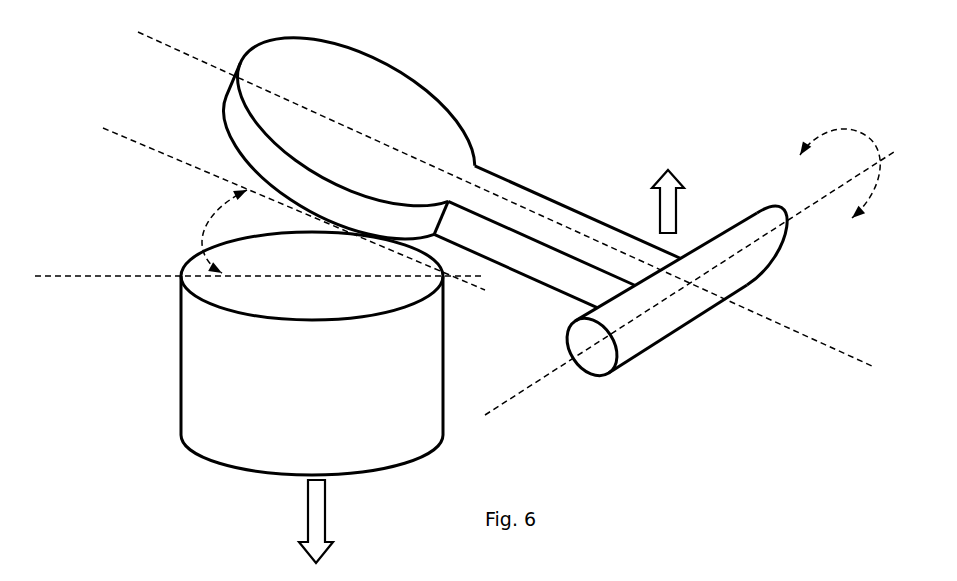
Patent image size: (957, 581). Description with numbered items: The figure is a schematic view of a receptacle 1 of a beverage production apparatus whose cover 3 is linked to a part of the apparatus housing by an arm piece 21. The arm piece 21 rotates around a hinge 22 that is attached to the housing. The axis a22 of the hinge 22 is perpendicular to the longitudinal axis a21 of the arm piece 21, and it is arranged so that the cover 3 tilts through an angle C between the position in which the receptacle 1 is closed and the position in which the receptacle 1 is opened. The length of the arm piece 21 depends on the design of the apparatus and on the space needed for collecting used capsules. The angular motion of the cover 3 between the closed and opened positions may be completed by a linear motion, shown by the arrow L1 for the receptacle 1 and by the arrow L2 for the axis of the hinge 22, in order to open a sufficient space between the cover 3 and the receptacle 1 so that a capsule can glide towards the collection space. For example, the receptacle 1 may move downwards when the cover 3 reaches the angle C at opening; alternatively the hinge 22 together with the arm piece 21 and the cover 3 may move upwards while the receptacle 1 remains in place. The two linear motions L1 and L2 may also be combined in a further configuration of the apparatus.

The receptacle 1 is at (245, 440).
The cover 3 is at (300, 90).
The arm piece 21 is at (537, 206).
The hinge 22 is at (724, 240).
The longitudinal axis of the arm piece a21 is at (774, 330).
The axis of the hinge a22 is at (551, 386).
The angle C is at (260, 209).
The linear motion of the receptacle L1 is at (332, 521).
The linear motion of the hinge axis L2 is at (668, 189).